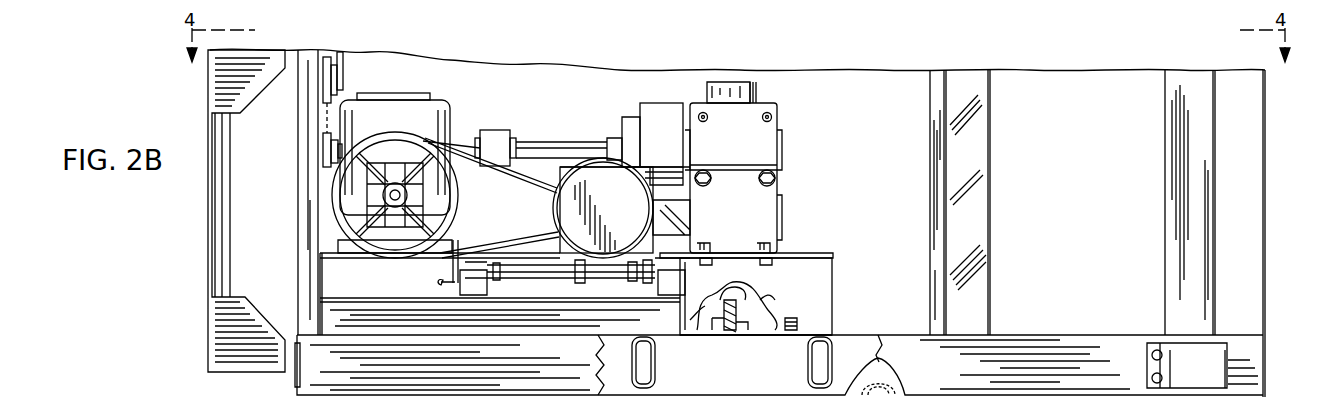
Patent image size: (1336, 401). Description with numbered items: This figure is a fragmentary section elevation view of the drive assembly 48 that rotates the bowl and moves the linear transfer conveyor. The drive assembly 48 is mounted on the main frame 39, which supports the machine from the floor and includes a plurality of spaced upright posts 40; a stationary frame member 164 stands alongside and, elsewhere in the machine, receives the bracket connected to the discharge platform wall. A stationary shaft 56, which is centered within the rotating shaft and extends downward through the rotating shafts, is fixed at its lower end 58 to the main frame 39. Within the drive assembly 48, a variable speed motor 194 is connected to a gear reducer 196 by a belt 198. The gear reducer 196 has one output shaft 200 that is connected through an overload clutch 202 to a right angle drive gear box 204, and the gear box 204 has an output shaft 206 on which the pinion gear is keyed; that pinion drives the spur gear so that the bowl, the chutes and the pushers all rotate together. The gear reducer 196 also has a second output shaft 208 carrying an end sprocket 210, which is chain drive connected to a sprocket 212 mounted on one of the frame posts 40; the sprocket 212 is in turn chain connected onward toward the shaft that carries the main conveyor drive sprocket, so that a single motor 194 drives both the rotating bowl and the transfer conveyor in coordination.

The main frame 39 is at (887, 328).
The upright posts 40 is at (985, 207).
The drive assembly 48 is at (831, 182).
The stationary shaft 56 is at (752, 300).
The lower end of stationary shaft 58 is at (730, 328).
The stationary frame member 164 is at (1183, 142).
The variable speed motor 194 is at (636, 213).
The gear reducer 196 is at (406, 122).
The belt 198 is at (522, 233).
The output shaft 200 is at (467, 142).
The overload clutch 202 is at (676, 128).
The right angle drive gear box 204 is at (748, 143).
The output shaft 206 is at (757, 92).
The second output shaft 208 is at (323, 148).
The end sprocket 210 is at (323, 138).
The sprocket 212 is at (323, 80).